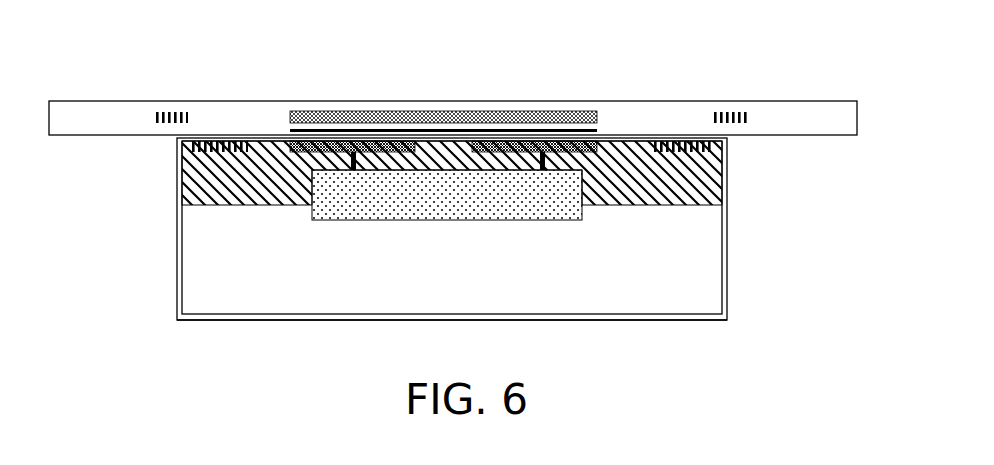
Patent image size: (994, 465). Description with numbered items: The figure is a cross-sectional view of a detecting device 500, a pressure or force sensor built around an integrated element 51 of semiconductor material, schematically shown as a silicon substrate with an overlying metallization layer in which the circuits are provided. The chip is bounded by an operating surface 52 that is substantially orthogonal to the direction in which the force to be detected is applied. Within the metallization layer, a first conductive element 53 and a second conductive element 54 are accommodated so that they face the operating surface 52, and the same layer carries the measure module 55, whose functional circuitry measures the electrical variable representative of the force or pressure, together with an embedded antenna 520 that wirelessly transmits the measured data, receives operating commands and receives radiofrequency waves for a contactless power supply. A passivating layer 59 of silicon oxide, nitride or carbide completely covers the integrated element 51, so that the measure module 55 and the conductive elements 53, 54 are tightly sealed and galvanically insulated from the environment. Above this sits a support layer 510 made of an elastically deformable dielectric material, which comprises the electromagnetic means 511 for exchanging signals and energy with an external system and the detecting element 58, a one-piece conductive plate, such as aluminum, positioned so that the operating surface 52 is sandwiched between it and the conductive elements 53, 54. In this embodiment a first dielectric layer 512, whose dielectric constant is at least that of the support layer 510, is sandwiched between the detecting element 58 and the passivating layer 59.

The detecting device 500 is at (145, 292).
The support layer 510 is at (777, 121).
The electromagnetic means 511 is at (165, 111).
The first dielectric layer 512 is at (543, 129).
The detecting element 58 is at (462, 110).
The integrated element 51 is at (690, 274).
The operating surface 52 is at (621, 146).
The first conductive element 53 is at (293, 155).
The second conductive element 54 is at (592, 138).
The measure module 55 is at (371, 200).
The passivating layer 59 is at (660, 321).
The embedded antenna 520 is at (183, 141).